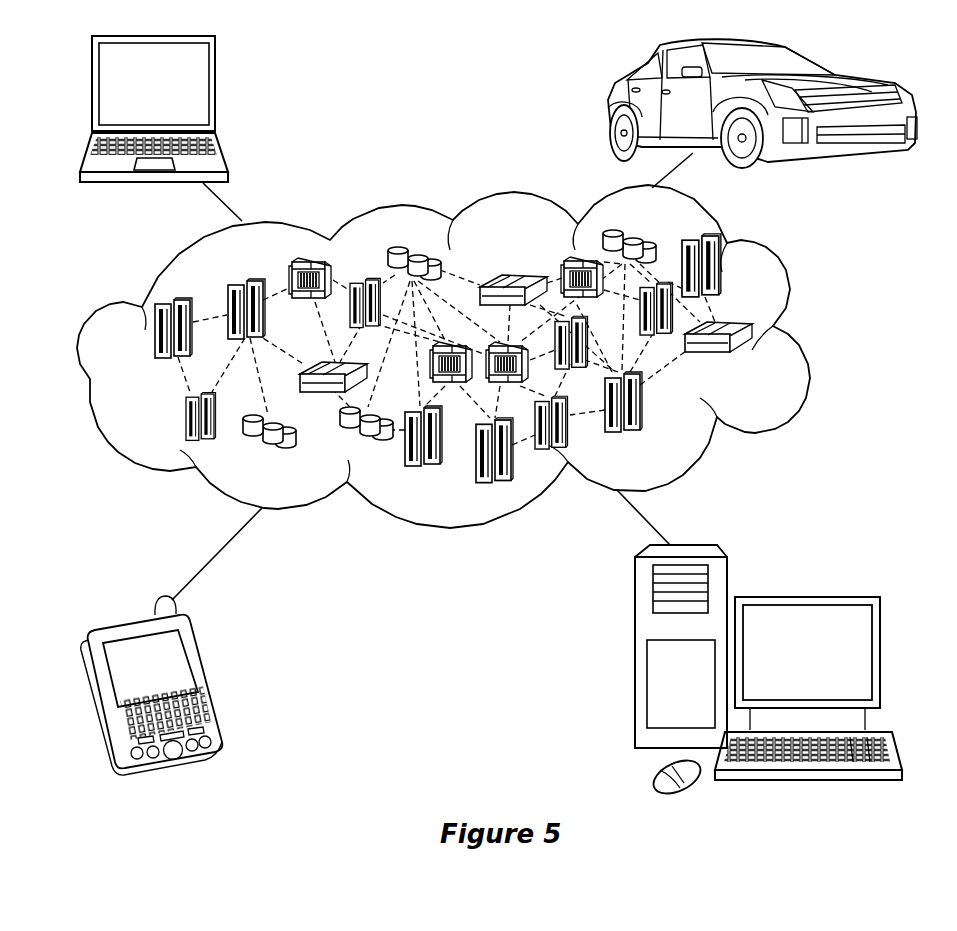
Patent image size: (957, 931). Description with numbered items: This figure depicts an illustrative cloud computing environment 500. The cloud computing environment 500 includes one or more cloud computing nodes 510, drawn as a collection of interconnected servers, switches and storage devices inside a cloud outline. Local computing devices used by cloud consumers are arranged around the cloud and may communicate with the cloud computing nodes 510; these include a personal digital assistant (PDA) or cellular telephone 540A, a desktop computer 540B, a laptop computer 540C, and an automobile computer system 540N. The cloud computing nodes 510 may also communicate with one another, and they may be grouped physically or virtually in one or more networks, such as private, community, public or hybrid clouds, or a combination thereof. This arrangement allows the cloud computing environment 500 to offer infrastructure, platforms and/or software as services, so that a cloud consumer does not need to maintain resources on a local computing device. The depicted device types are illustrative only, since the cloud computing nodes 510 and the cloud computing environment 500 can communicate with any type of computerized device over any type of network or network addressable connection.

The cloud computing environment 500 is at (805, 335).
The cloud computing nodes 510 is at (762, 368).
The personal digital assistant (PDA) or cellular telephone 540A is at (208, 679).
The desktop computer 540B is at (804, 596).
The laptop computer 540C is at (215, 90).
The automobile computer system 540N is at (608, 106).